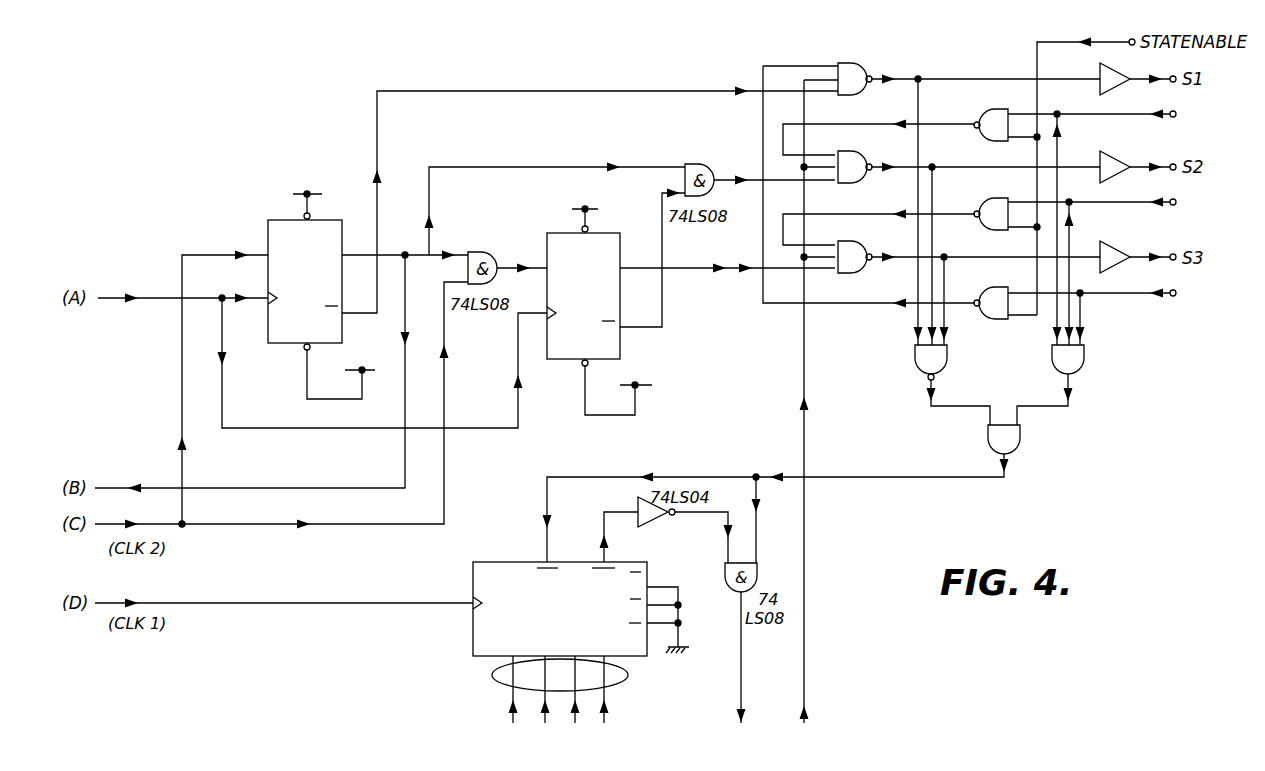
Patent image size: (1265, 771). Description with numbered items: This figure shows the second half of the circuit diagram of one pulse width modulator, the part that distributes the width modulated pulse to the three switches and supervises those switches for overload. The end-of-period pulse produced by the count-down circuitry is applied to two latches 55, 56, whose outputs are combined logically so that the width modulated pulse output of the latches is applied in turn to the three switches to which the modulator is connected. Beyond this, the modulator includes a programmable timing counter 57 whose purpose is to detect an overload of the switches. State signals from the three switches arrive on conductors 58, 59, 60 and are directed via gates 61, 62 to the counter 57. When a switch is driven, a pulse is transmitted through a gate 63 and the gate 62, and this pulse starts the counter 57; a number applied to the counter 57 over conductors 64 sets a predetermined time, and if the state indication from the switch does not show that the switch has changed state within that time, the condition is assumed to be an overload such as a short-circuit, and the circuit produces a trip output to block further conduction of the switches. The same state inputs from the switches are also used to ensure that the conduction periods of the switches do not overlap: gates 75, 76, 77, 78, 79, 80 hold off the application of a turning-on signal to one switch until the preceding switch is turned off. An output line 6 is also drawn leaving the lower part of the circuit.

The output line 6 is at (742, 673).
The latch 55 is at (280, 345).
The latch 56 is at (563, 360).
The programmable timing counter 57 is at (704, 551).
The conductor 58 is at (1117, 114).
The conductor 59 is at (1117, 202).
The conductor 60 is at (1108, 300).
The gate 61 is at (1053, 366).
The gate 62 is at (988, 444).
The gate 63 is at (913, 371).
The conductors 64 is at (492, 680).
The gate 75 is at (978, 132).
The gate 76 is at (980, 228).
The gate 77 is at (992, 320).
The gate 78 is at (858, 242).
The gate 79 is at (858, 152).
The gate 80 is at (858, 63).